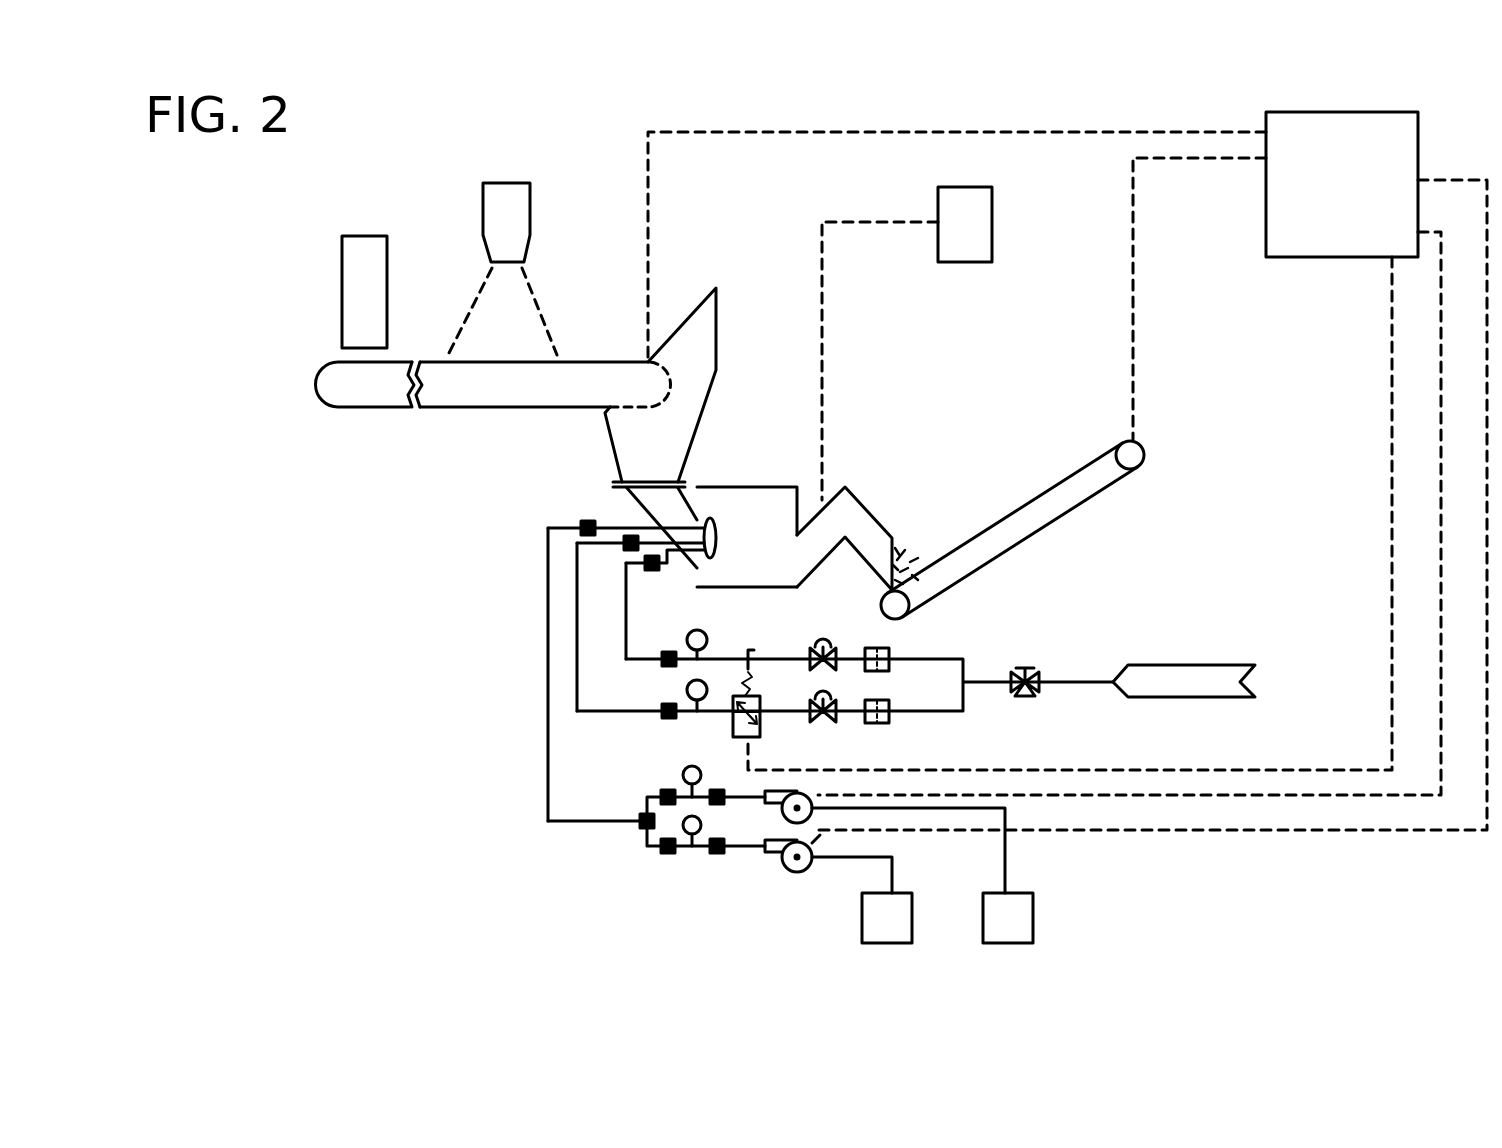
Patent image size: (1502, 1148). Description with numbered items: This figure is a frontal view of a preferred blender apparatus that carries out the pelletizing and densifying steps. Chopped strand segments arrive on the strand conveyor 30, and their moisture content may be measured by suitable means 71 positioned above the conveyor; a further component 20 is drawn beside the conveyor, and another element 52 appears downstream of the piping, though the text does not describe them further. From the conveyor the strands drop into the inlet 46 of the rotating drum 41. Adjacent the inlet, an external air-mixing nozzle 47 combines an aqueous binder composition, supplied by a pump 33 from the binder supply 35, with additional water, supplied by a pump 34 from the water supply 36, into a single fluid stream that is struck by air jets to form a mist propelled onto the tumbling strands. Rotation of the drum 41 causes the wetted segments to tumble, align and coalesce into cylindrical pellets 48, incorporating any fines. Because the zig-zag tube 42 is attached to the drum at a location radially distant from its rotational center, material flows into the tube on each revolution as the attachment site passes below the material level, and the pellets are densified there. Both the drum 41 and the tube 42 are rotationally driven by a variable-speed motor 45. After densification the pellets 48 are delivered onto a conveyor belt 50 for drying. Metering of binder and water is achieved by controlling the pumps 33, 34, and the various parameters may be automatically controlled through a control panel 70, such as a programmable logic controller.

The control unit 20 is at (342, 268).
The strand conveyor 30 is at (578, 362).
The pump 33 is at (790, 872).
The pump 34 is at (782, 818).
The binder supply 35 is at (887, 918).
The water supply 36 is at (1008, 918).
The rotating drum 41 is at (765, 487).
The zig-zag tube 42 is at (858, 500).
The variable-speed motor 45 is at (992, 214).
The inlet 46 is at (700, 542).
The air-mixing nozzle 47 is at (718, 520).
The pellets 48 is at (917, 560).
The conveyor belt 50 is at (1060, 478).
The exhaust 52 is at (1183, 665).
The control panel 70 is at (1067, 471).
The moisture measuring means 71 is at (483, 208).